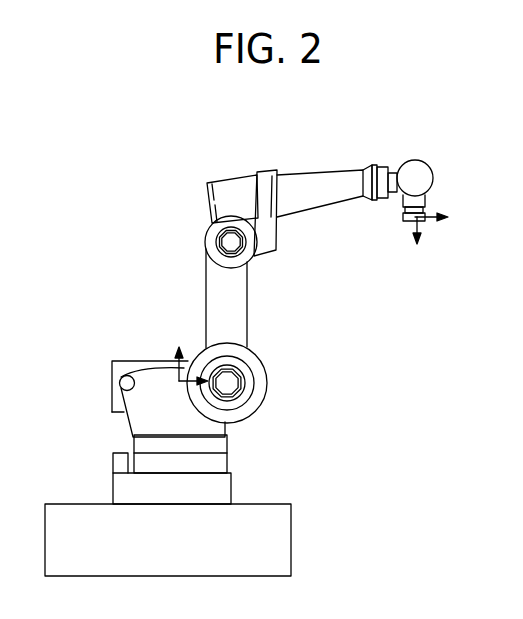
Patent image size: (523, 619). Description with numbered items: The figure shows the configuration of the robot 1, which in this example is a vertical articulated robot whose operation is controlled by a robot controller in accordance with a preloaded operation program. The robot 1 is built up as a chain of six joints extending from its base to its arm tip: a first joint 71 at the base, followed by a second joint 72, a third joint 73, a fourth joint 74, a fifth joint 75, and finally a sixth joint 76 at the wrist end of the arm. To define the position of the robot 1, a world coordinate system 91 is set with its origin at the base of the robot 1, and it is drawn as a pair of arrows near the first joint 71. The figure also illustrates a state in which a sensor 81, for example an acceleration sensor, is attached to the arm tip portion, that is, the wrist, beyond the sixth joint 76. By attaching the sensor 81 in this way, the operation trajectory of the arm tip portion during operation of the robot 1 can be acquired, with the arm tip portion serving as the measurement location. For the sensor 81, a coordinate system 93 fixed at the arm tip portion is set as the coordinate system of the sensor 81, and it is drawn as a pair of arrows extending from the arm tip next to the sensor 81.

The robot 1 is at (262, 348).
The first joint 71 is at (192, 446).
The second joint 72 is at (243, 384).
The third joint 73 is at (247, 254).
The fourth joint 74 is at (371, 168).
The fifth joint 75 is at (419, 170).
The sixth joint 76 is at (428, 213).
The sensor 81 is at (403, 215).
The world coordinate system 91 is at (179, 378).
The coordinate system 93 is at (421, 229).